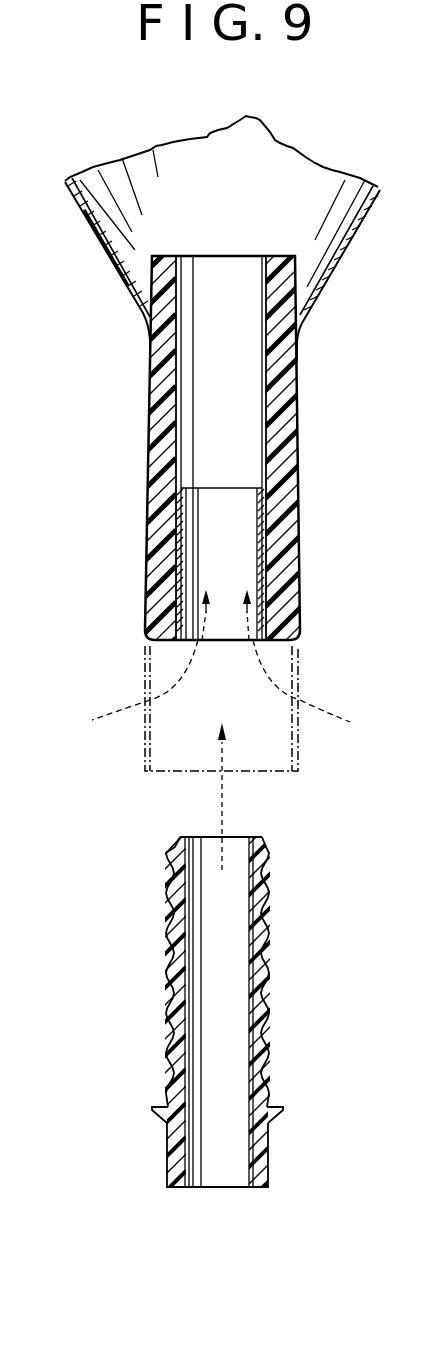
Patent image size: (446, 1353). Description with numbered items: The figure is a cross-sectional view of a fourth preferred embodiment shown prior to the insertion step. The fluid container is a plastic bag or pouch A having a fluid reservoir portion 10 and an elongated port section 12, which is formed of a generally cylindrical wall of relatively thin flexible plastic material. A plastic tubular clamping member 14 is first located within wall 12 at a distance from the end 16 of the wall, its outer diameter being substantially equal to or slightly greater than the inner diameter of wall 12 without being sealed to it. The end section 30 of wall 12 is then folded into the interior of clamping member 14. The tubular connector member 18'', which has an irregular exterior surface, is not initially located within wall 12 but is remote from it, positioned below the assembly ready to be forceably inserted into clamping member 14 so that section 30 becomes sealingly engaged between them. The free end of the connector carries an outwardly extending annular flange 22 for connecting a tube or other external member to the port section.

The fluid reservoir portion 10 is at (127, 230).
The pouch A is at (346, 250).
The port section 12 is at (148, 417).
The tubular clamping member 14 is at (280, 492).
The end section 30 is at (257, 542).
The end 16 is at (170, 773).
The tubular connector member 18'' is at (257, 1008).
The flange 22 is at (285, 1107).